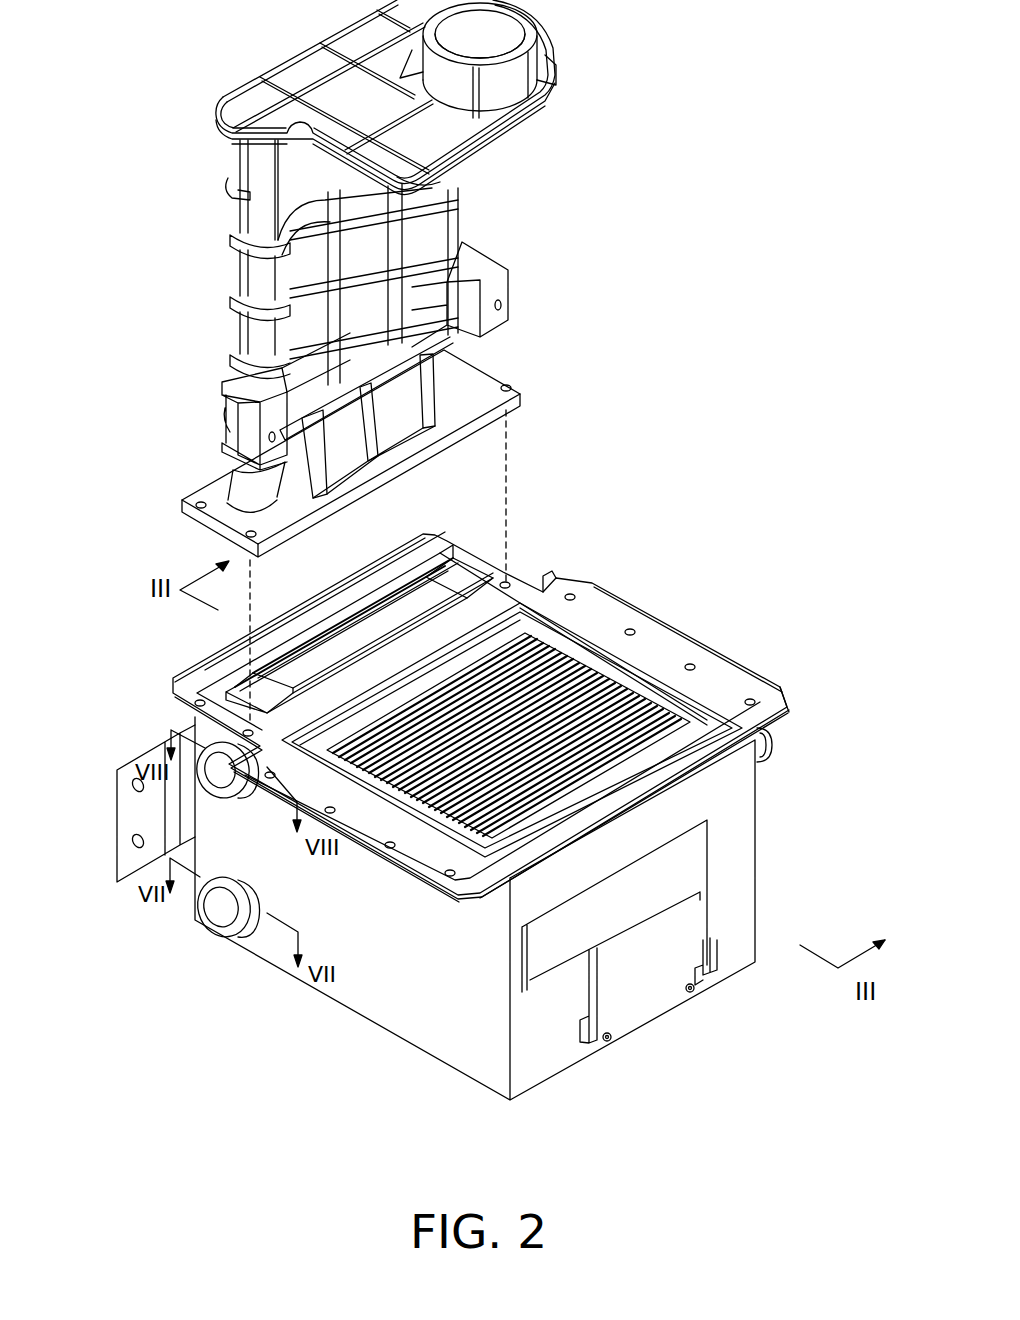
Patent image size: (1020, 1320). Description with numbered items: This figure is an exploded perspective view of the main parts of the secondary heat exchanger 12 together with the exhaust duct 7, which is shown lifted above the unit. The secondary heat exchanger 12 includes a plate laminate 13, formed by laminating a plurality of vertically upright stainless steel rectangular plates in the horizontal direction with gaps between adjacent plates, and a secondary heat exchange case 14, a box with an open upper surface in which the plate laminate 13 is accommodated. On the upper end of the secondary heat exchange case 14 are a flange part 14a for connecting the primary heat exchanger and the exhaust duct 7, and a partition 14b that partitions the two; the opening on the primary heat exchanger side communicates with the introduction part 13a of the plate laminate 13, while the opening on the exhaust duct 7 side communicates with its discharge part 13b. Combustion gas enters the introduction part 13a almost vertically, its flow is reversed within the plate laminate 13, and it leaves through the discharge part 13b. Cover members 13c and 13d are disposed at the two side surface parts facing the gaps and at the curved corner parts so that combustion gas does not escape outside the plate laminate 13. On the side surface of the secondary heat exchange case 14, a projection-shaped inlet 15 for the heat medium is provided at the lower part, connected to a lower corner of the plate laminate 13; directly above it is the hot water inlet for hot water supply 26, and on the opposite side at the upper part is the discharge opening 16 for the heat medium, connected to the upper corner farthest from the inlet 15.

The exhaust duct 7 is at (238, 340).
The secondary heat exchanger 12 is at (657, 542).
The plate laminate 13 is at (684, 712).
The introduction part 13a is at (600, 677).
The discharge part 13b is at (451, 595).
The cover member 13c is at (508, 835).
The cover member 13d is at (283, 672).
The secondary heat exchange case 14 is at (757, 798).
The flange part 14a is at (786, 710).
The partition 14b is at (528, 580).
The inlet 15 is at (200, 920).
The discharge opening 16 is at (770, 741).
The hot water inlet for hot water supply 26 is at (205, 790).